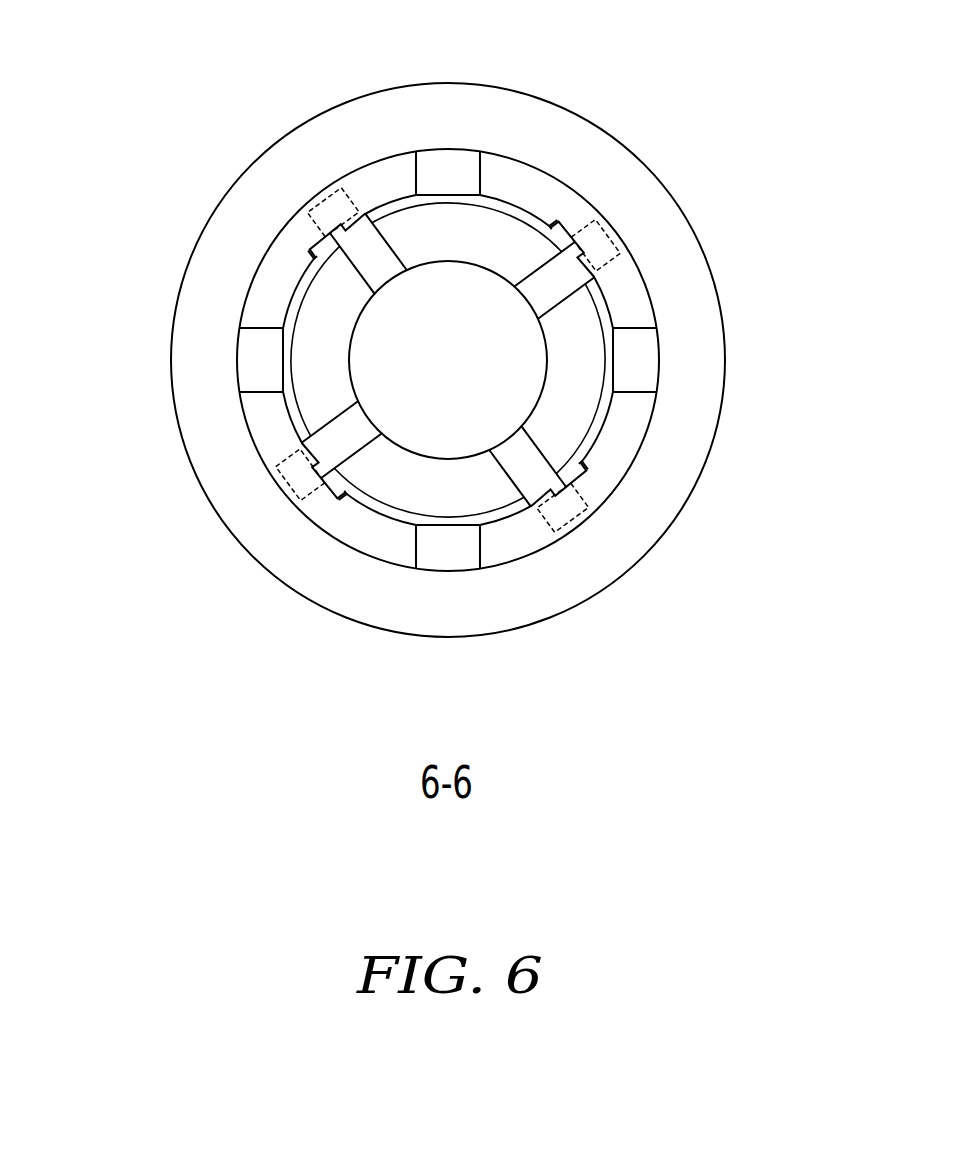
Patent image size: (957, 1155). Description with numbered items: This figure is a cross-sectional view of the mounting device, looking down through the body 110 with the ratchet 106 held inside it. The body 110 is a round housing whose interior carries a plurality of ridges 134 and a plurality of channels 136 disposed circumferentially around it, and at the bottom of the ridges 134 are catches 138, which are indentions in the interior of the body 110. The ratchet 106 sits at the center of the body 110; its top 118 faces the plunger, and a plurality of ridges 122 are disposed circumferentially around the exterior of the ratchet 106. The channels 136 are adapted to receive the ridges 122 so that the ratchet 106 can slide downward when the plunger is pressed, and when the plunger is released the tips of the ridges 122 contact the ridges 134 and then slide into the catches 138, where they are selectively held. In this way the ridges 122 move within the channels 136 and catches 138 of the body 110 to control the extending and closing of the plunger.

The body 110 is at (643, 156).
The top 118 is at (495, 404).
The channels 136 is at (445, 172).
The ridges 134 is at (360, 183).
The catches 138 is at (322, 236).
The ratchet 106 is at (327, 250).
The ridges 122 is at (293, 478).